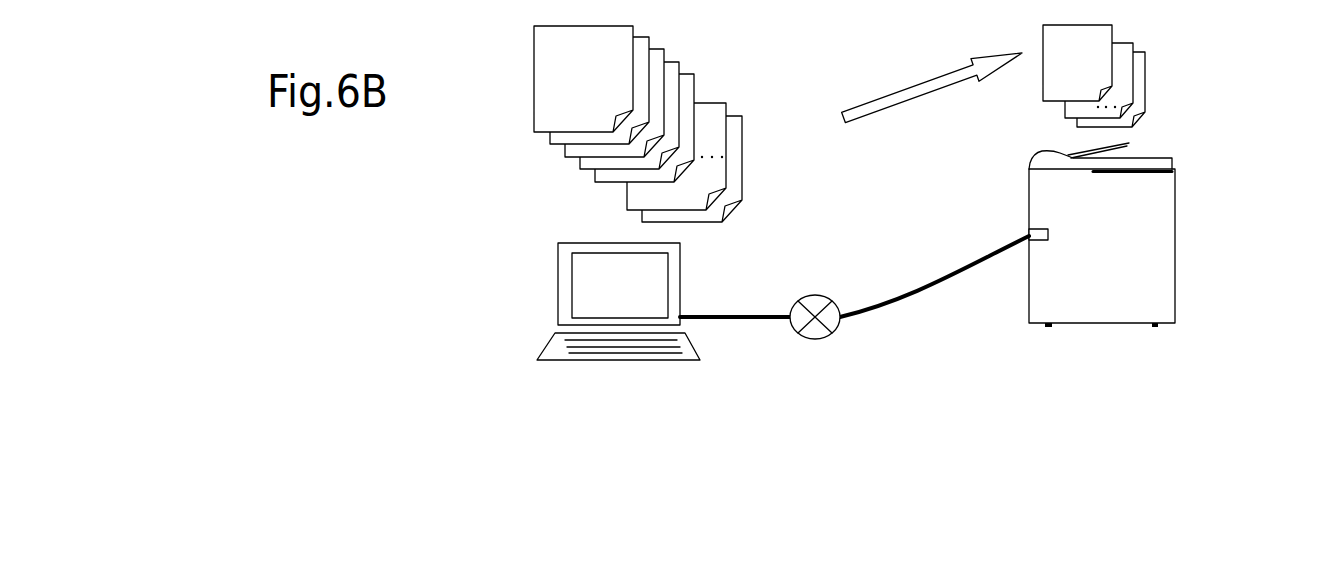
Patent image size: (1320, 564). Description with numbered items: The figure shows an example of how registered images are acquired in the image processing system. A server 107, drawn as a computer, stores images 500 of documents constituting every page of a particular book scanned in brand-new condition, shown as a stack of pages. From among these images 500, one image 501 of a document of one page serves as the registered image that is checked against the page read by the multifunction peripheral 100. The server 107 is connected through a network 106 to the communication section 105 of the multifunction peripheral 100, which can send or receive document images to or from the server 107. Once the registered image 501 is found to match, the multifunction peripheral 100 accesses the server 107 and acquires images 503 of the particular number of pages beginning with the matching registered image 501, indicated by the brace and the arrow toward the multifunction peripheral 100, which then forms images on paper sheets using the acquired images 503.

The images of documents 500 is at (621, 124).
The image of a document of one page 501 is at (685, 86).
The images of the particular number of pages 503 is at (758, 103).
The multifunction peripheral 100 is at (1061, 215).
The communication section 105 is at (1029, 230).
The network 106 is at (820, 295).
The server 107 is at (670, 292).